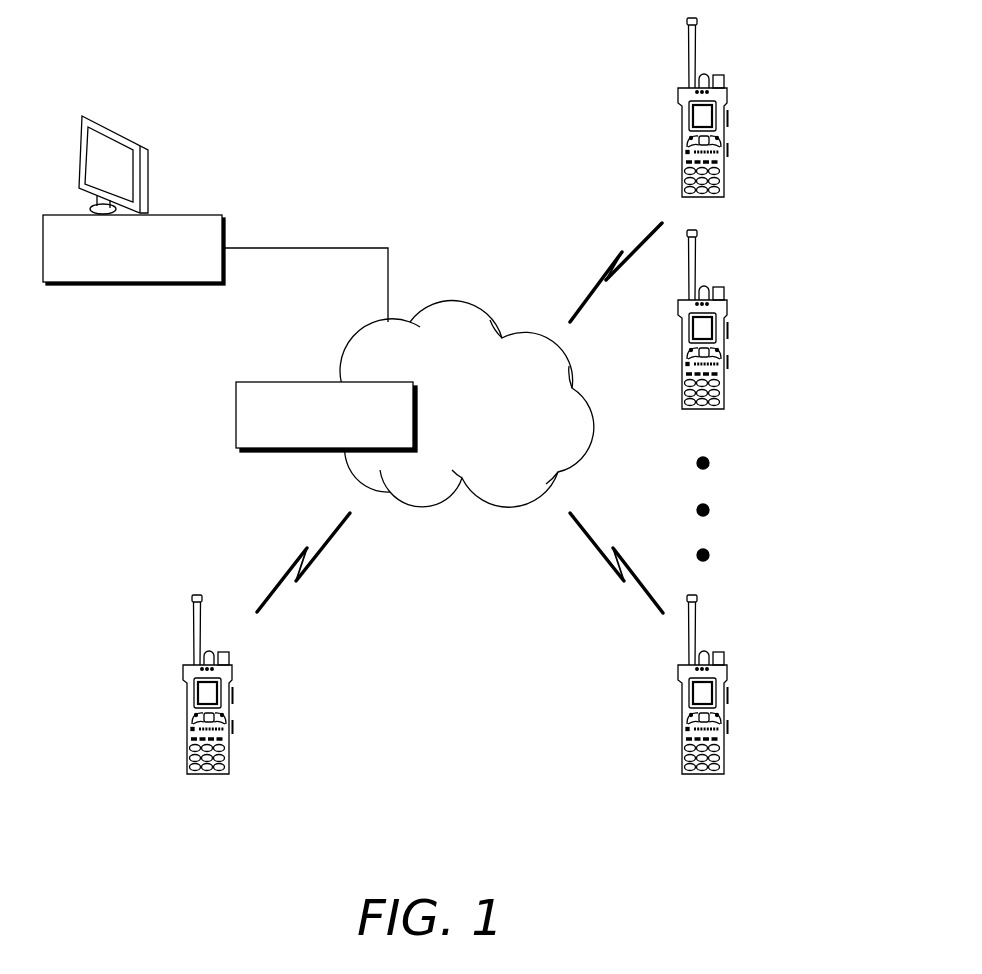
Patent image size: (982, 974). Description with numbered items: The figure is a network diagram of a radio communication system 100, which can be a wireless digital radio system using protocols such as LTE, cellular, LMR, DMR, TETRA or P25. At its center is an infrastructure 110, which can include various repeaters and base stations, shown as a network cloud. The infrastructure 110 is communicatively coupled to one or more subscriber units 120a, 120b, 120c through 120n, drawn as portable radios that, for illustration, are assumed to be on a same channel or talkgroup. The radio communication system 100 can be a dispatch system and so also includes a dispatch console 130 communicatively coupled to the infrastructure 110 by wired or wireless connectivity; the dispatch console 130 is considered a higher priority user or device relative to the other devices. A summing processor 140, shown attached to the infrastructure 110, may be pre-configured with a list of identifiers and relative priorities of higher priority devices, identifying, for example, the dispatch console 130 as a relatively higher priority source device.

The radio communication system 100 is at (824, 850).
The infrastructure 110 is at (451, 303).
The subscriber unit 120a is at (197, 594).
The subscriber unit 120b is at (716, 75).
The subscriber unit 120c is at (717, 290).
The subscriber unit 120n is at (717, 655).
The dispatch console 130 is at (126, 142).
The summing processor 140 is at (251, 382).